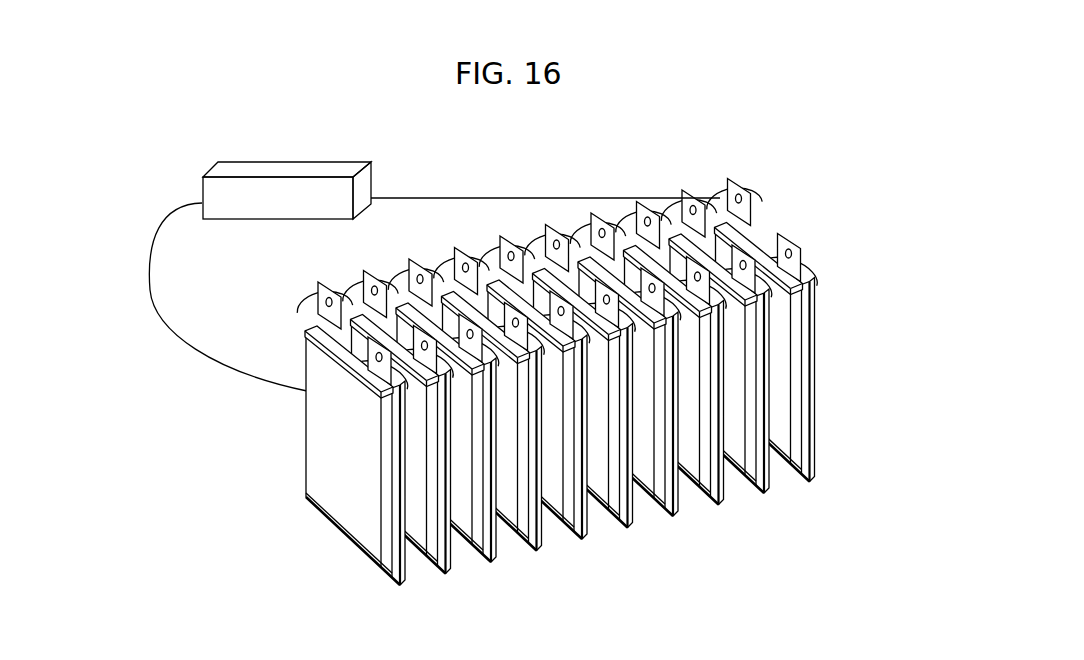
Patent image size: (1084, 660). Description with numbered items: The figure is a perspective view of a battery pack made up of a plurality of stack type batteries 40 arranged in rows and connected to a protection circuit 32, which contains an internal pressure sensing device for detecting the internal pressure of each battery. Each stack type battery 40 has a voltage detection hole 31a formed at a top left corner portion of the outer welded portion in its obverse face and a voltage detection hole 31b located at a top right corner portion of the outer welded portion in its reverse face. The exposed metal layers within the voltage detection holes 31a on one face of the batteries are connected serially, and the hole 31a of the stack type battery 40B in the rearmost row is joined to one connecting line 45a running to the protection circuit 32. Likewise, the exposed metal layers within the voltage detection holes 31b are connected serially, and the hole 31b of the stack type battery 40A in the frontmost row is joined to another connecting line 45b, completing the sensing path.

The protection circuit 32 is at (330, 162).
The connecting line 45a is at (490, 197).
The connecting line 45b is at (155, 323).
The voltage detection hole 31a is at (312, 314).
The voltage detection hole 31b is at (368, 386).
The stack type battery 40 is at (520, 543).
The stack type battery 40A is at (306, 438).
The stack type battery 40B is at (752, 243).